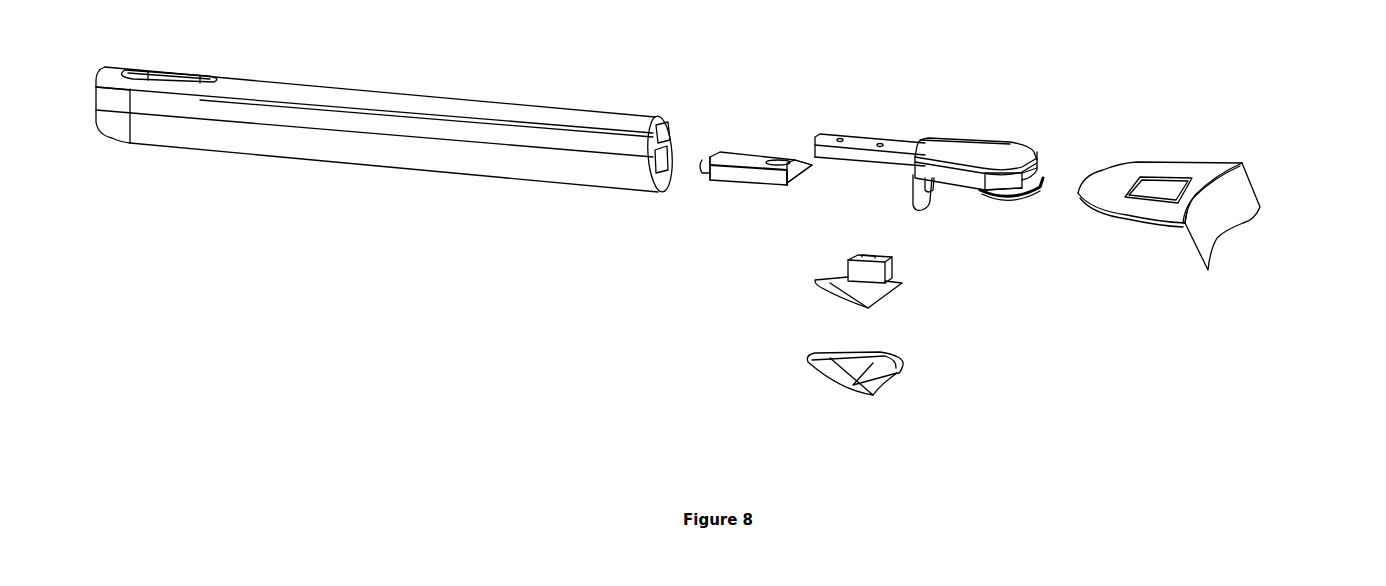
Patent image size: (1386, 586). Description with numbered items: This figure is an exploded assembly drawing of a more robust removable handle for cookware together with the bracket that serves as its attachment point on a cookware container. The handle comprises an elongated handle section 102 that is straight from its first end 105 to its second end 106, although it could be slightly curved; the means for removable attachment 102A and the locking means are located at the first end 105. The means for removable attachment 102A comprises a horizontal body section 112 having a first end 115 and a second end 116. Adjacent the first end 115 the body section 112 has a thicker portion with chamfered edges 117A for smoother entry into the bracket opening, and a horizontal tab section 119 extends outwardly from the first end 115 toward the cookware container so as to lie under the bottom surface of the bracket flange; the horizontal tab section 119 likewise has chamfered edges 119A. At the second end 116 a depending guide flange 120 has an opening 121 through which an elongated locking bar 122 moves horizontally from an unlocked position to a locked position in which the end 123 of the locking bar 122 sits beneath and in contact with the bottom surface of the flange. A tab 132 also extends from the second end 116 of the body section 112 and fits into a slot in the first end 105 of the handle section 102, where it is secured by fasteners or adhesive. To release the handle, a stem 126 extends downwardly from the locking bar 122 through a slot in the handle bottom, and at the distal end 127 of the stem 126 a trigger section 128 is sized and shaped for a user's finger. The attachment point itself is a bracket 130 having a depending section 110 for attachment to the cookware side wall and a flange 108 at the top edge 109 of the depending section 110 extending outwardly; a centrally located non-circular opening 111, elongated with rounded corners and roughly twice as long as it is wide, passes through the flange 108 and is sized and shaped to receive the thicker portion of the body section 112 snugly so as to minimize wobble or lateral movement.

The elongated handle section 102 is at (352, 93).
The first end 105 is at (635, 177).
The second end 106 is at (157, 132).
The elongated locking bar 122 is at (740, 158).
The end of the locking bar 123 is at (805, 160).
The tab 132 is at (863, 143).
The second end of the body section 116 is at (933, 147).
The horizontal body section 112 is at (975, 153).
The first end of the body section 115 is at (1033, 142).
The means for removable attachment 102A is at (1053, 170).
The horizontal tab section 119 is at (1045, 189).
The chamfered edges of the horizontal tab section 119A is at (1023, 200).
The chamfered edges of the thicker portion 117A is at (1000, 202).
The depending guide flange 120 is at (918, 200).
The opening in the guide flange 121 is at (928, 187).
The flange 108 is at (1103, 185).
The non-circular opening 111 is at (1153, 188).
The top edge 109 is at (1240, 163).
The depending section 110 is at (1212, 230).
The bracket 130 is at (1273, 195).
The stem 126 is at (870, 273).
The distal end of the stem 127 is at (897, 377).
The trigger section 128 is at (872, 390).